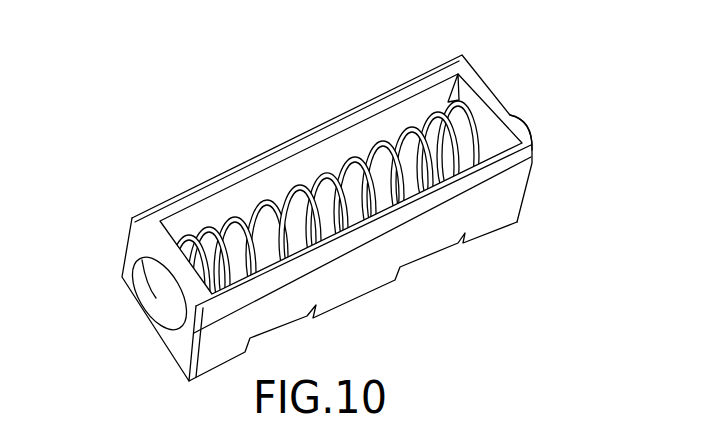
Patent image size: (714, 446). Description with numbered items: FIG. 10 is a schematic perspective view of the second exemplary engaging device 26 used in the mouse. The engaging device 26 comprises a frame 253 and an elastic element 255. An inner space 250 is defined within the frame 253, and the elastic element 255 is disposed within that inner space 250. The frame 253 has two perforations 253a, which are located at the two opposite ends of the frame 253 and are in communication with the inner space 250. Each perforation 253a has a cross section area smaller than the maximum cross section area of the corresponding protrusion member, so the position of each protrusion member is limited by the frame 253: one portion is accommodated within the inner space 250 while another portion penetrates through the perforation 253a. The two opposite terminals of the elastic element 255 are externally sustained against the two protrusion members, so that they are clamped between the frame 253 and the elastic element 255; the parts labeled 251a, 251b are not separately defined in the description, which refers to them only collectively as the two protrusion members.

The engaging device 26 is at (154, 104).
The inner space 250 is at (323, 205).
The elastic element 255 is at (327, 228).
The spring coil portion 251a is at (339, 218).
The spring end 251b is at (153, 297).
The frame 253 is at (511, 207).
The perforation 253a is at (168, 328).